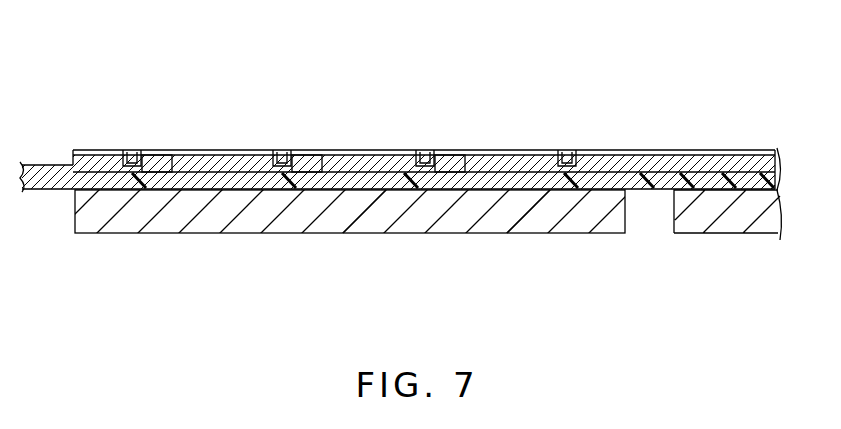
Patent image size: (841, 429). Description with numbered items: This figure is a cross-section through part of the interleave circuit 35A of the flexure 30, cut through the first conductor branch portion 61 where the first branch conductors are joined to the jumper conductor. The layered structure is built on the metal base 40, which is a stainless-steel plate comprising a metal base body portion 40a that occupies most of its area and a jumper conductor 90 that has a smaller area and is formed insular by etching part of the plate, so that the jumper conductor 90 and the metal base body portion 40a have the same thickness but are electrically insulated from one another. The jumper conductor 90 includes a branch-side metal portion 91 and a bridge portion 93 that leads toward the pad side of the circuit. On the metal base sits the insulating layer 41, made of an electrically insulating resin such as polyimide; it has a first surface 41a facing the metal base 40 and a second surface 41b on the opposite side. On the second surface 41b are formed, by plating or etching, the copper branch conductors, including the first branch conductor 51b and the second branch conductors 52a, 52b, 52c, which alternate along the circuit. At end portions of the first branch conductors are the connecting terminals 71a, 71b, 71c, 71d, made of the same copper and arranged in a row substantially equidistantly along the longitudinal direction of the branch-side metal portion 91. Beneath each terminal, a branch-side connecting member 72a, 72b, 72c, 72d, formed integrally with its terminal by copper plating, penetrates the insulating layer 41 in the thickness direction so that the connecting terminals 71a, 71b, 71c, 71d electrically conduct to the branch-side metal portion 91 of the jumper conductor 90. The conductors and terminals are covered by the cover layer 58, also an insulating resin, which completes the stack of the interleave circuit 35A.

The interleave circuit 35A is at (660, 73).
The first conductor branch portion 61 is at (390, 90).
The cover layer 58 is at (602, 152).
The first branch conductor 51b is at (745, 162).
The second surface 41b is at (685, 158).
The connecting terminal 71a is at (175, 152).
The connecting terminal 71b is at (528, 152).
The connecting terminal 71c is at (450, 152).
The connecting terminal 71d is at (303, 152).
The second branch conductor 52a is at (202, 152).
The second branch conductor 52b is at (492, 152).
The second branch conductor 52c is at (347, 152).
The branch-side connecting member 72a is at (140, 178).
The branch-side connecting member 72b is at (572, 180).
The branch-side connecting member 72c is at (412, 180).
The branch-side connecting member 72d is at (290, 178).
The flexure 30 is at (198, 237).
The bridge portion 93 is at (258, 186).
The jumper conductor 90 is at (373, 210).
The branch-side metal portion 91 is at (497, 210).
The insulating layer 41 is at (653, 185).
The first surface 41a is at (732, 180).
The metal base body portion 40a is at (688, 222).
The metal base 40 is at (787, 238).